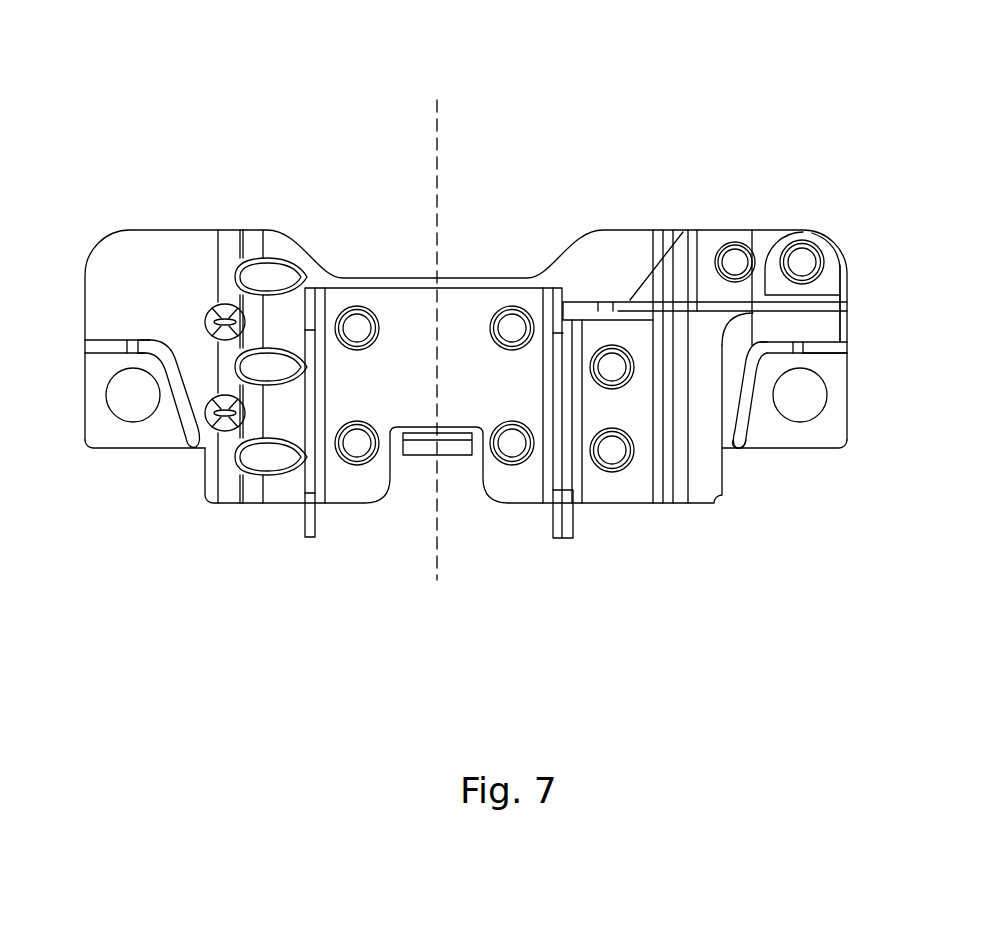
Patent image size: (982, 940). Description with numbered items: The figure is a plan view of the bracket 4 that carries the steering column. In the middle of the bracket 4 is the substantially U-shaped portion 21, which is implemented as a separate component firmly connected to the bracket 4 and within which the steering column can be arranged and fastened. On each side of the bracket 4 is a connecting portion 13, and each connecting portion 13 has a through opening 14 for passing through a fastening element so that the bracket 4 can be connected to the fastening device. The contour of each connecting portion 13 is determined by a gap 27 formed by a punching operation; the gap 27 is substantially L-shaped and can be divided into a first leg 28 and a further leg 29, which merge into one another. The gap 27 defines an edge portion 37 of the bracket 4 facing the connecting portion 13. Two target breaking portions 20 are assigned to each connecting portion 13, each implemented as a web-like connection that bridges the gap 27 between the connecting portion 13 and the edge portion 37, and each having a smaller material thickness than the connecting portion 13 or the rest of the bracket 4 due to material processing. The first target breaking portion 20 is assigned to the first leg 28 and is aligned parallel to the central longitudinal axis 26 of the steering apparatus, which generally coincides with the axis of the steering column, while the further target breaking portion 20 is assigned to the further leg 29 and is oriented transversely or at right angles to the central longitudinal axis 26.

The bracket 4 is at (613, 100).
The connecting portion 13 is at (97, 443).
The through opening 14 is at (133, 395).
The target breaking portion 20 is at (127, 335).
The U-shaped portion 21 is at (497, 535).
The central longitudinal axis 26 is at (437, 132).
The gap 27 is at (176, 357).
The first leg 28 is at (828, 358).
The further leg 29 is at (731, 424).
The edge portion 37 is at (150, 330).